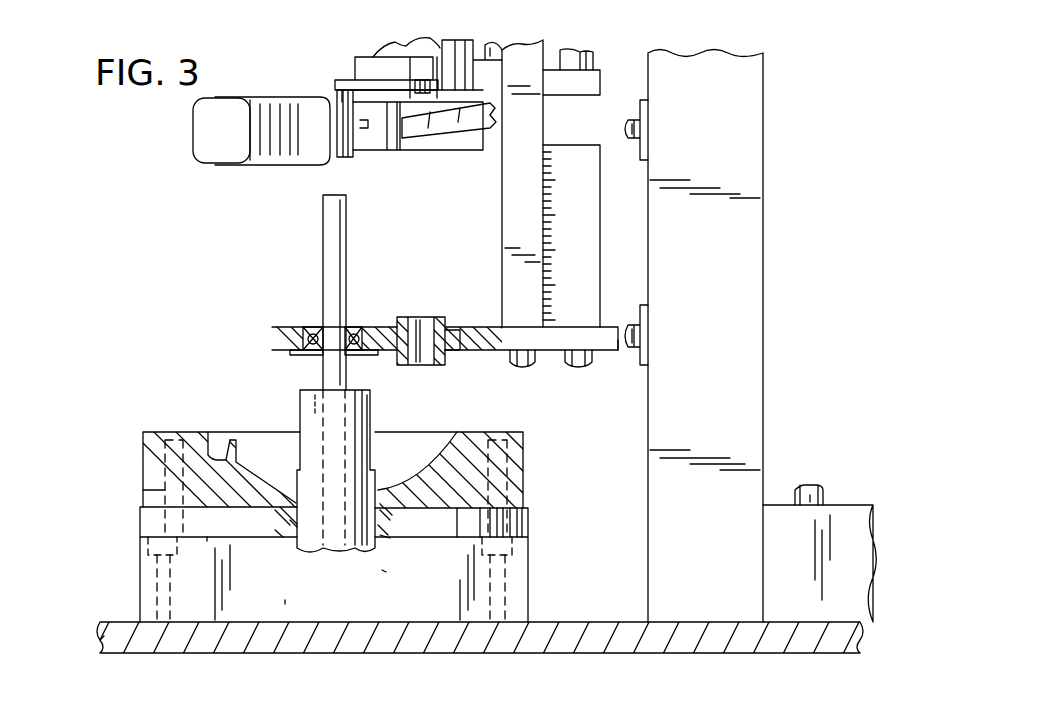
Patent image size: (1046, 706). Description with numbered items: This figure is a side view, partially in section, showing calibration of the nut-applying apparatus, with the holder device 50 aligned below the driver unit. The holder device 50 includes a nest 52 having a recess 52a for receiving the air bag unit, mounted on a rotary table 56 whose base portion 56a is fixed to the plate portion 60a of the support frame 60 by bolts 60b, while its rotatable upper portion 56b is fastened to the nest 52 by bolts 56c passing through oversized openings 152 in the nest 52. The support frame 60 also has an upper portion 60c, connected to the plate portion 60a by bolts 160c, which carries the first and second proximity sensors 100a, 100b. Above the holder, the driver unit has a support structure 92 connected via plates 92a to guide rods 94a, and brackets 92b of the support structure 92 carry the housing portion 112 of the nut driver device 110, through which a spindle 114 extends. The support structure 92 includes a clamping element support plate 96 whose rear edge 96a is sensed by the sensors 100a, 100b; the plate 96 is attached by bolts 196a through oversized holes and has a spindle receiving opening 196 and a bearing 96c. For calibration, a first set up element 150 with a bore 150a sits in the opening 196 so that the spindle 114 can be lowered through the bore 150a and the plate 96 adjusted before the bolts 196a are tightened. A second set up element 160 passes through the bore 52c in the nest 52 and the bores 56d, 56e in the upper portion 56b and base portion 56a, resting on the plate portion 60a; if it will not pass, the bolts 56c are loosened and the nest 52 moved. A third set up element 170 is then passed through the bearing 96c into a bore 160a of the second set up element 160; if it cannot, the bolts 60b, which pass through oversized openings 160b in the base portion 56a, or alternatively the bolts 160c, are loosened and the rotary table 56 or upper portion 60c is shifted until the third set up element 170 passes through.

The holder device 50 is at (126, 405).
The nest 52 is at (156, 433).
The recess 52a is at (232, 452).
The bore 52c is at (380, 484).
The rotary table 56 is at (140, 556).
The base portion 56a is at (285, 600).
The upper portion 56b is at (207, 538).
The bolts 56c is at (165, 490).
The bore 56d is at (388, 536).
The bore 56e is at (384, 570).
The support frame 60 is at (704, 642).
The plate portion 60a is at (128, 640).
The bolts 60b is at (150, 573).
The upper portion 60c is at (760, 240).
The support structure 92 is at (604, 330).
The plates 92a is at (600, 80).
The brackets 92b is at (487, 45).
The guide rods 94a is at (596, 57).
The clamping element support plate 96 is at (610, 330).
The rear edge 96a is at (620, 348).
The bearing 96c is at (302, 340).
The first proximity sensor 100a is at (640, 336).
The second proximity sensor 100b is at (640, 128).
The nut driver device 110 is at (447, 41).
The housing portion 112 is at (382, 48).
The spindle 114 is at (403, 42).
The first set up element 150 is at (403, 318).
The bore 150a is at (428, 325).
The openings 152 is at (165, 463).
The second set up element 160 is at (371, 414).
The bore 160a is at (315, 412).
The openings 160b is at (152, 603).
The bolts 160c is at (810, 485).
The third set up element 170 is at (325, 215).
The spindle receiving opening 196 is at (455, 330).
The bolts 196a is at (575, 367).